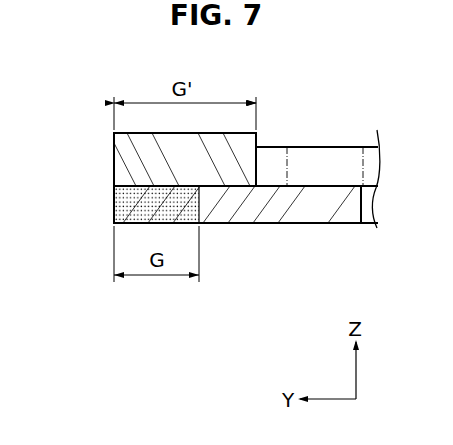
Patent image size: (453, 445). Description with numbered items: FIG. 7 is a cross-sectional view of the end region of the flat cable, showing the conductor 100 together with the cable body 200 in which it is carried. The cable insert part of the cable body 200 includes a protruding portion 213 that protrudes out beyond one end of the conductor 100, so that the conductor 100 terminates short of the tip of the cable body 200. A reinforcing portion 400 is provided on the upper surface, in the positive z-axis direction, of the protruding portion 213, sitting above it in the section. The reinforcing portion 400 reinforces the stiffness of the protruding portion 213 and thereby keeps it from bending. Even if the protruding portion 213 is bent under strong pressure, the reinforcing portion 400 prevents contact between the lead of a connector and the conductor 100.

The conductor 100 is at (319, 147).
The cable body 200 is at (319, 227).
The protruding portion 213 is at (120, 202).
The reinforcing portion 400 is at (120, 160).